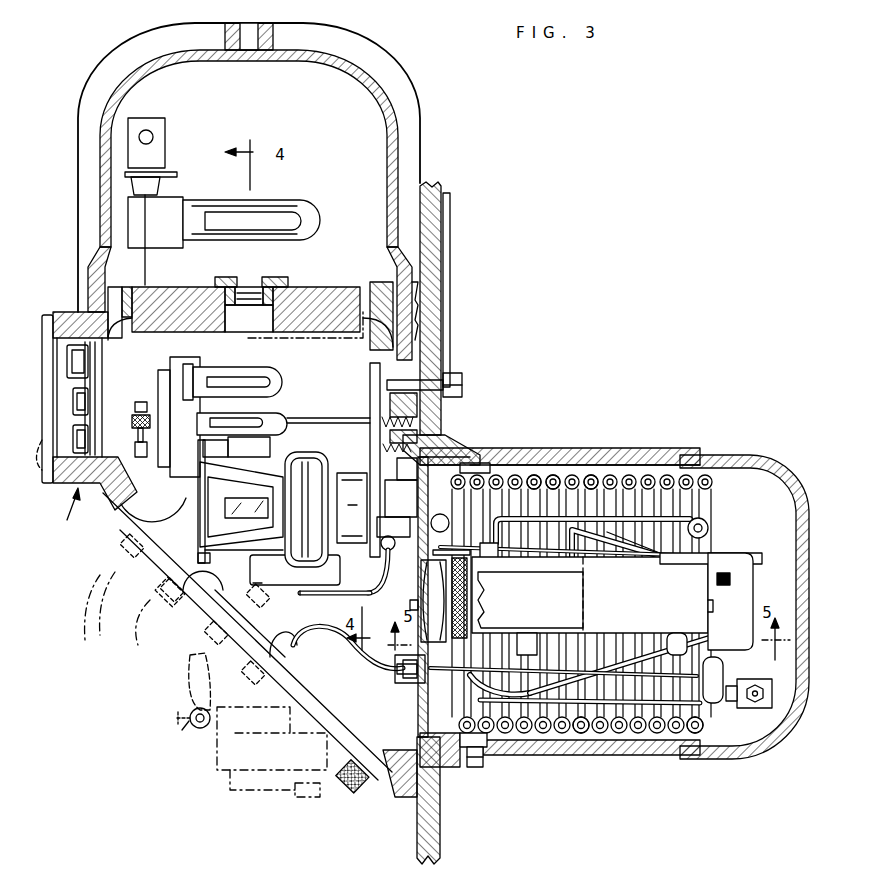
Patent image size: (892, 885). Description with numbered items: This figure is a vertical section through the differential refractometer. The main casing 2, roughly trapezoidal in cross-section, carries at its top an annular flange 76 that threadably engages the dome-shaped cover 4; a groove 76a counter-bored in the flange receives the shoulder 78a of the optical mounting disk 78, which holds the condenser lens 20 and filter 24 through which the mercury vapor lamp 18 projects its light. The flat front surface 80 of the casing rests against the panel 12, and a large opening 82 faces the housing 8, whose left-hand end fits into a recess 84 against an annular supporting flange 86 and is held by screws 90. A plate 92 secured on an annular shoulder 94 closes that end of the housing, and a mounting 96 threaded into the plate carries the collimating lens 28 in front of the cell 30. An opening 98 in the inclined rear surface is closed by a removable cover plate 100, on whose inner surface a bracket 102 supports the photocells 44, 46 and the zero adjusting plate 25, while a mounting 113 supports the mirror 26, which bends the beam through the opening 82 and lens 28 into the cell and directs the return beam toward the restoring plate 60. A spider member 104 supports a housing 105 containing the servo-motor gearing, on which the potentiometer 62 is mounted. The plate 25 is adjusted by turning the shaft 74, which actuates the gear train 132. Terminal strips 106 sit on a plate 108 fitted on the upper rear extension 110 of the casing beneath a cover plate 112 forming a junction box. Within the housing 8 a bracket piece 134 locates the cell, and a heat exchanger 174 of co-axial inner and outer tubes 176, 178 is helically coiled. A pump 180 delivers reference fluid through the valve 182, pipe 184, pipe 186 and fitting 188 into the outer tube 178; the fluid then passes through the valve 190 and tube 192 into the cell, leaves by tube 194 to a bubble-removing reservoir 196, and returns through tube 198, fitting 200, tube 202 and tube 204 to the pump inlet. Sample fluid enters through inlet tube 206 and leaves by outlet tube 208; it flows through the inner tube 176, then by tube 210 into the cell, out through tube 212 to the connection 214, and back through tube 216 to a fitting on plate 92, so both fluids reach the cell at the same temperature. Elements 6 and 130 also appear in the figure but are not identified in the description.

The main casing 2 is at (68, 509).
The dome-shaped cover 4 is at (393, 90).
The outer dome cover 6 is at (190, 30).
The housing 8 is at (608, 455).
The panel 12 is at (436, 298).
The mercury vapor lamp 18 is at (302, 205).
The condenser lens 20 is at (247, 284).
The filter 24 is at (240, 300).
The zero adjusting plate 25 is at (288, 455).
The mirror 26 is at (262, 620).
The collimating lens 28 is at (405, 601).
The cell 30 is at (485, 625).
The photocell 44 is at (243, 370).
The photocell 46 is at (242, 435).
The restoring plate 60 is at (236, 507).
The potentiometer 62 is at (352, 486).
The shaft 74 is at (342, 418).
The annular flange 76 is at (385, 283).
The groove 76a is at (378, 338).
The optical mounting disk 78 is at (312, 318).
The shoulder 78a is at (371, 290).
The front surface 80 is at (420, 332).
The opening 82 is at (400, 722).
The recess 84 is at (448, 437).
The annular supporting flange 86 is at (397, 504).
The screws 90 is at (378, 428).
The plate 92 is at (478, 467).
The annular shoulder 94 is at (436, 458).
The mounting 96 is at (470, 643).
The opening 98 is at (330, 704).
The cover plate 100 is at (192, 605).
The bracket 102 is at (172, 516).
The spider member 104 is at (230, 485).
The housing 105 is at (326, 460).
The terminal strips 106 is at (88, 369).
The plate 108 is at (90, 390).
The upper rear extension 110 is at (72, 310).
The cover plate 112 is at (50, 412).
The mounting 113 is at (285, 630).
The seal 130 is at (441, 418).
The gear train 132 is at (128, 444).
The bracket piece 134 is at (545, 602).
The heat exchanger 174 is at (629, 475).
The inner tube 176 is at (553, 475).
The outer tube 178 is at (591, 475).
The pump 180 is at (275, 733).
The valve 182 is at (183, 728).
The pipe 184 is at (205, 658).
The pipe 186 is at (331, 596).
The fitting 188 is at (392, 571).
The valve 190 is at (752, 685).
The tube 192 is at (704, 722).
The tube 194 is at (690, 552).
The reservoir 196 is at (747, 603).
The tube 198 is at (557, 660).
The fitting 200 is at (402, 678).
The tube 202 is at (332, 640).
The tube 204 is at (222, 770).
The inlet tube 206 is at (100, 576).
The outlet tube 208 is at (142, 612).
The tube 210 is at (581, 734).
The tube 212 is at (534, 475).
The connection 214 is at (709, 525).
The tube 216 is at (516, 547).